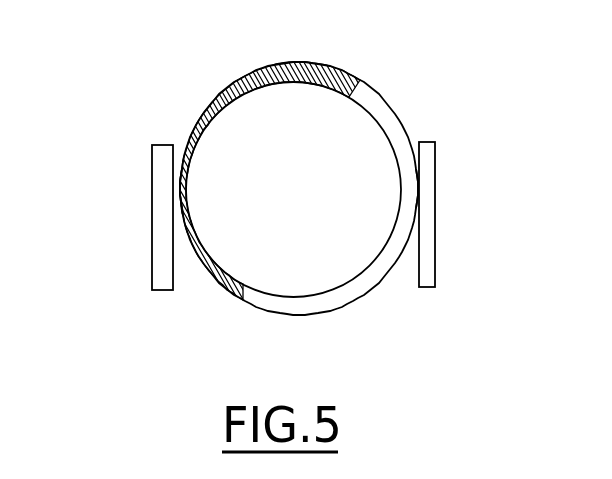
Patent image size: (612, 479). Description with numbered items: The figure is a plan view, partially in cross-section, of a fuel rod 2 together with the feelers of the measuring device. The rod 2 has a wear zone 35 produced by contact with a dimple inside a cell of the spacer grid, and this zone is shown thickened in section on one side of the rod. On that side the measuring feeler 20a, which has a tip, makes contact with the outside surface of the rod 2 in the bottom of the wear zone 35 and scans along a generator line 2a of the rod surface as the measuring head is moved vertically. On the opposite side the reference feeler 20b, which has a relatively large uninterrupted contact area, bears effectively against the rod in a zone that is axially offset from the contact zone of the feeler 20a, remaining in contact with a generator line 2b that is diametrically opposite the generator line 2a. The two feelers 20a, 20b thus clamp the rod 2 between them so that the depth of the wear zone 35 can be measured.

The fuel rod 2 is at (327, 67).
The wear zone 35 is at (174, 143).
The generator line 2a is at (175, 189).
The generator line 2b is at (418, 190).
The measuring feeler 20a is at (162, 258).
The reference feeler 20b is at (428, 245).